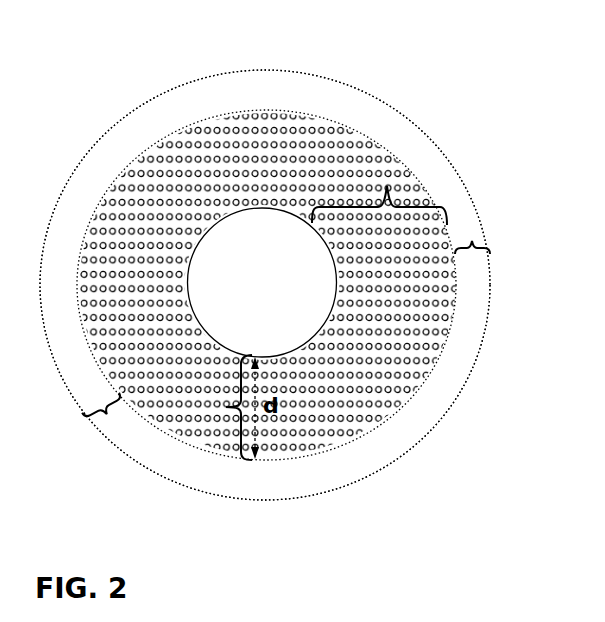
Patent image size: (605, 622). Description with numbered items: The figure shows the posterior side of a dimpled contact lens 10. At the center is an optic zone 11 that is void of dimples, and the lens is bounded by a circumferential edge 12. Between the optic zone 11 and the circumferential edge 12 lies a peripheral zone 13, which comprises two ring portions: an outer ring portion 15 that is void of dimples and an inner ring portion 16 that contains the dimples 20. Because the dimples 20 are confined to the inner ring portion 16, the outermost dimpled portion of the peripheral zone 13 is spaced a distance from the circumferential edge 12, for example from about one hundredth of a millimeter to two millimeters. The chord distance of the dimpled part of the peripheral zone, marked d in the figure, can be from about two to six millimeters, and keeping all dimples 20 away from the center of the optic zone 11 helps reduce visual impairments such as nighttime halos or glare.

The contact lens 10 is at (435, 95).
The optic zone 11 is at (266, 285).
The circumferential edge 12 is at (492, 277).
The peripheral zone 13 is at (400, 310).
The outer ring portion 15 is at (472, 238).
The inner ring portion 16 is at (388, 186).
The dimples 20 is at (368, 420).